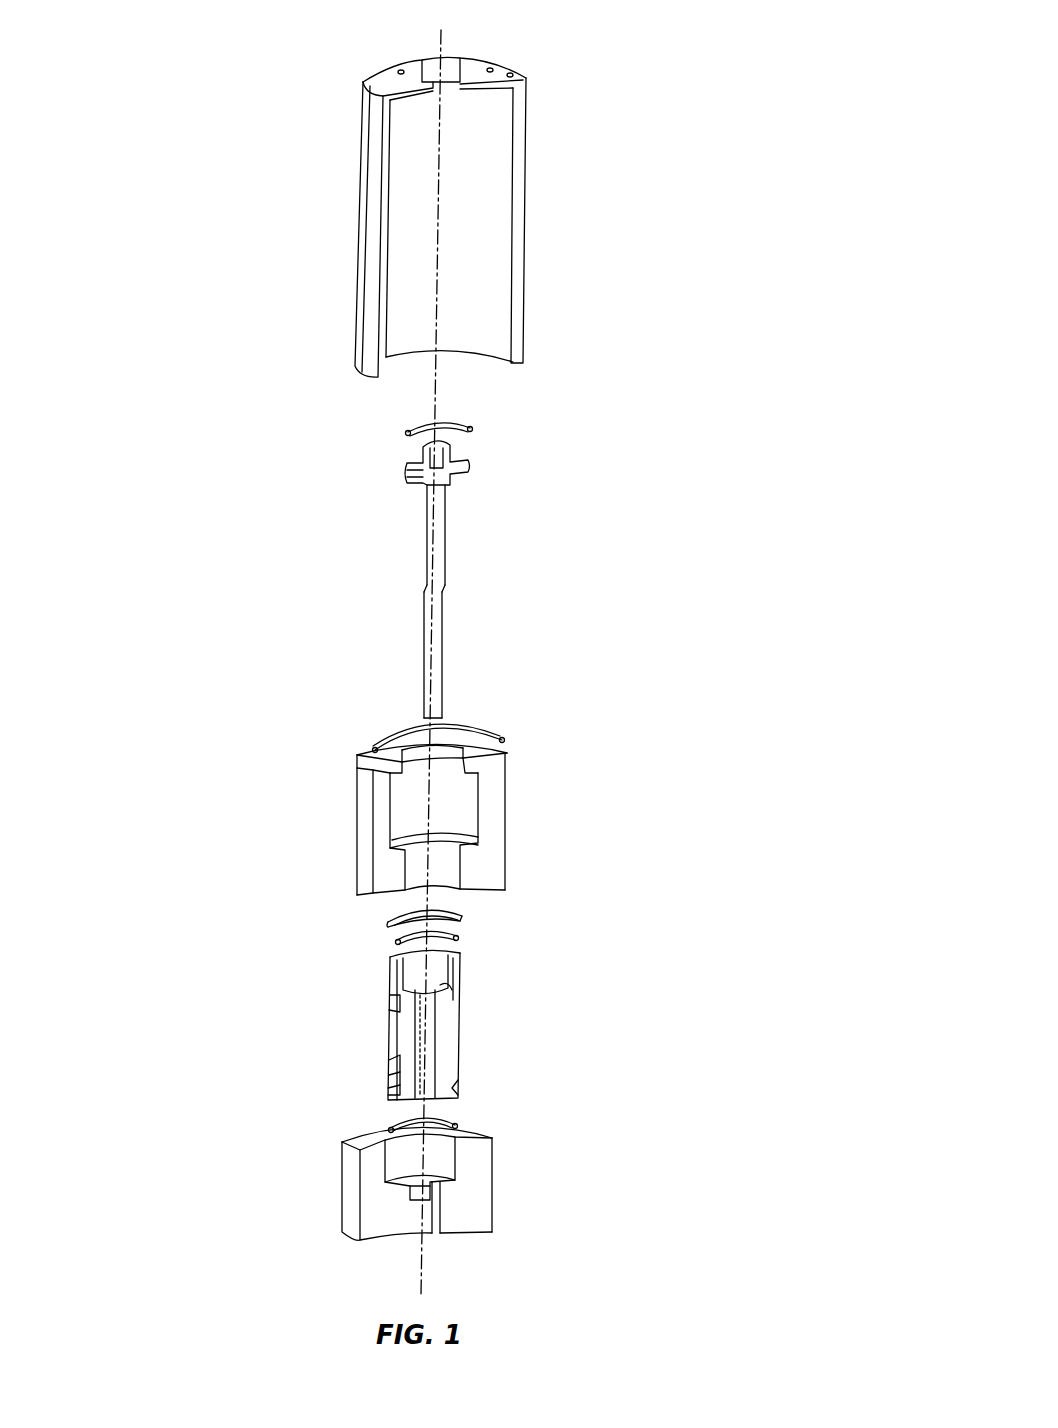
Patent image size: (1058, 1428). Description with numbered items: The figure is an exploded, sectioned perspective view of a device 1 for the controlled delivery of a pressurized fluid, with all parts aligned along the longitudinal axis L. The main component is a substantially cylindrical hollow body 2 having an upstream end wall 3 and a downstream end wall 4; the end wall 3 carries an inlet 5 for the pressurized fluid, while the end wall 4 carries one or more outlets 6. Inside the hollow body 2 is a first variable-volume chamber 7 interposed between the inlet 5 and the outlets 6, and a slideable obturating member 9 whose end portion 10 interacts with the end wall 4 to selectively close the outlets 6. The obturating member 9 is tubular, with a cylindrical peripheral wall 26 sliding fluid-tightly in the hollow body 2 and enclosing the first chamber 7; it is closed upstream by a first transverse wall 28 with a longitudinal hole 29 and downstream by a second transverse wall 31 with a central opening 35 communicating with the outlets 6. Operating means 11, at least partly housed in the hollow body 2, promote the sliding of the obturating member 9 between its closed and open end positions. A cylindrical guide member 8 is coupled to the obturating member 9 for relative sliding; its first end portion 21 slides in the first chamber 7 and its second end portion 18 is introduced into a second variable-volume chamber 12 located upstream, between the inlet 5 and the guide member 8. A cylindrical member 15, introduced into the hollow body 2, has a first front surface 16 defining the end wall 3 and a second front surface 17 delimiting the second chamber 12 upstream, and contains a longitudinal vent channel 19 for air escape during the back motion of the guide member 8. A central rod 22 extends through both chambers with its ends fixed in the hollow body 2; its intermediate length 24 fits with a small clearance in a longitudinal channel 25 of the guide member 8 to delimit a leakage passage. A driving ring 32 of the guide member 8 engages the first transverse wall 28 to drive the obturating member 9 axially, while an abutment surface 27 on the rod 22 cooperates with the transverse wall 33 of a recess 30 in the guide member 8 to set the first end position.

The device 1 is at (633, 207).
The hollow body 2 is at (434, 193).
The end wall 3 is at (483, 1233).
The end wall 4 is at (377, 83).
The inlet 5 is at (428, 1235).
The outlets 6 is at (400, 70).
The first variable-volume chamber 7 is at (413, 813).
The guide member 8 is at (426, 1025).
The obturating member 9 is at (428, 799).
The end portion 10 is at (508, 756).
The operating means 11 is at (573, 942).
The second variable-volume chamber 12 is at (447, 1157).
The cylindrical member 15 is at (411, 1206).
The first front surface 16 is at (372, 1242).
The second front surface 17 is at (365, 1142).
The second end portion 18 is at (467, 1083).
The vent channel 19 is at (443, 1207).
The first end portion 21 is at (477, 983).
The central rod 22 is at (404, 570).
The intermediate length 24 is at (420, 658).
The longitudinal channel 25 is at (422, 1045).
The peripheral wall 26 is at (360, 797).
The abutment surface 27 is at (444, 592).
The first transverse wall 28 is at (362, 895).
The longitudinal hole 29 is at (477, 890).
The recess 30 is at (422, 982).
The second transverse wall 31 is at (385, 756).
The driving ring 32 is at (463, 917).
The transverse wall 33 is at (460, 987).
The central opening 35 is at (420, 755).
The longitudinal axis L is at (418, 1268).